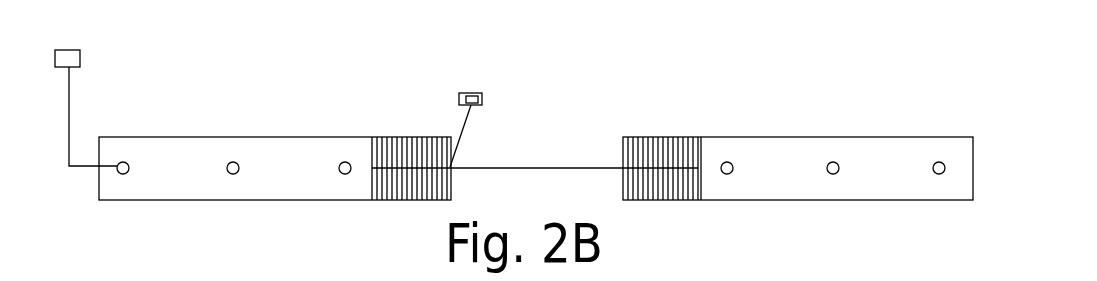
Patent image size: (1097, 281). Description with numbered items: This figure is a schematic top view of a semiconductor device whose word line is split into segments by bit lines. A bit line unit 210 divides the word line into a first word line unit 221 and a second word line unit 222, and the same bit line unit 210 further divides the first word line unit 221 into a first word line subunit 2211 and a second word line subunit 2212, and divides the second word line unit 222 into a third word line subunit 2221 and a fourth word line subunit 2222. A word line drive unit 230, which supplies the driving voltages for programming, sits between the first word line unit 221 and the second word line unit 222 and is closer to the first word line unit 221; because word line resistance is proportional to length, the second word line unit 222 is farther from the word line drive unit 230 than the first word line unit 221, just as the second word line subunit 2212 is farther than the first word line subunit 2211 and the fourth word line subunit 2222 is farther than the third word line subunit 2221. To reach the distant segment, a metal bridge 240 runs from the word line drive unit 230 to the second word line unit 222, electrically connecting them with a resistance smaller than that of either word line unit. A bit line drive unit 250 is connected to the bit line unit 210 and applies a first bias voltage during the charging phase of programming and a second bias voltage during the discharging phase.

The bit line unit 210 is at (122, 162).
The first word line unit 221 is at (353, 88).
The first word line subunit 2211 is at (288, 165).
The second word line subunit 2212 is at (172, 163).
The second word line unit 222 is at (952, 88).
The third word line subunit 2221 is at (770, 168).
The fourth word line subunit 2222 is at (883, 168).
The word line drive unit 230 is at (463, 92).
The metal bridge 240 is at (528, 165).
The bit line drive unit 250 is at (80, 50).